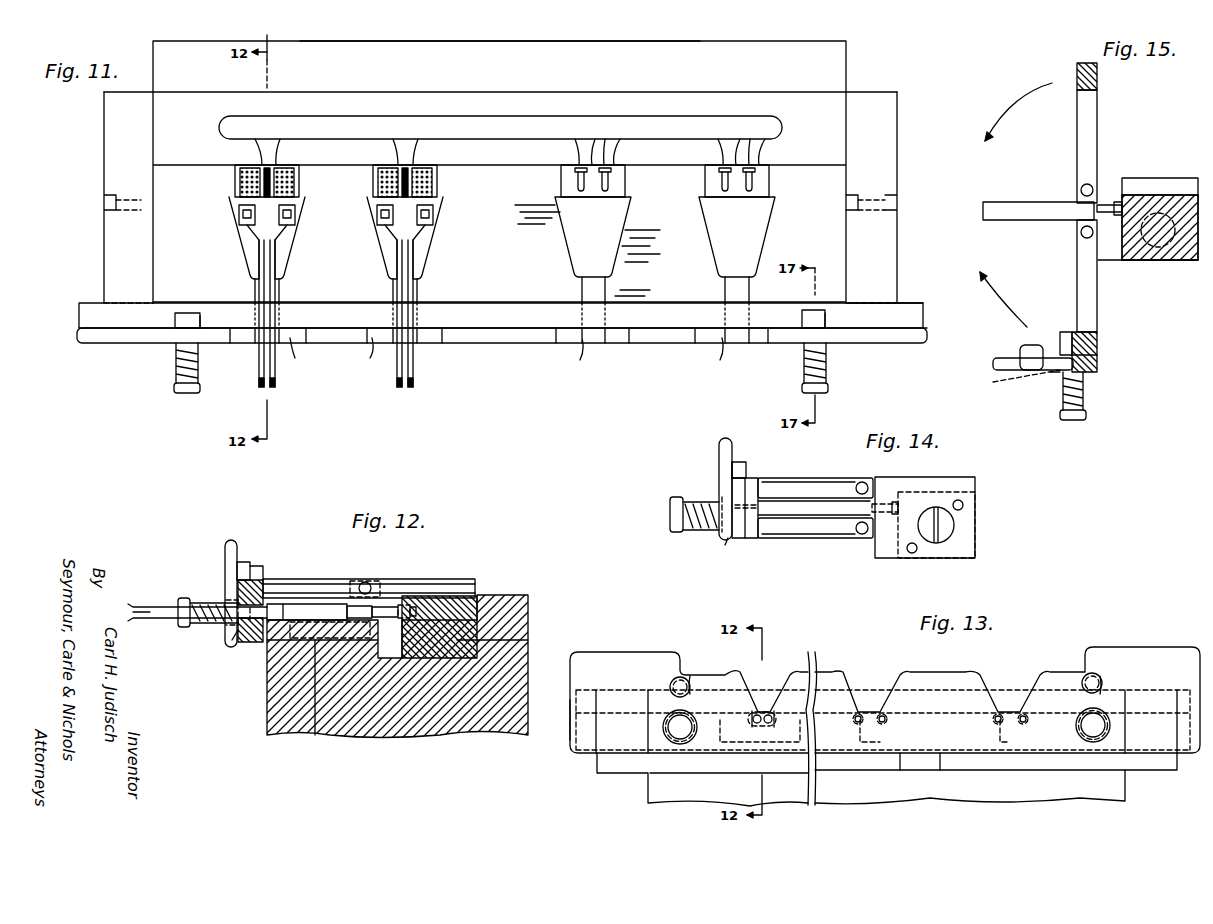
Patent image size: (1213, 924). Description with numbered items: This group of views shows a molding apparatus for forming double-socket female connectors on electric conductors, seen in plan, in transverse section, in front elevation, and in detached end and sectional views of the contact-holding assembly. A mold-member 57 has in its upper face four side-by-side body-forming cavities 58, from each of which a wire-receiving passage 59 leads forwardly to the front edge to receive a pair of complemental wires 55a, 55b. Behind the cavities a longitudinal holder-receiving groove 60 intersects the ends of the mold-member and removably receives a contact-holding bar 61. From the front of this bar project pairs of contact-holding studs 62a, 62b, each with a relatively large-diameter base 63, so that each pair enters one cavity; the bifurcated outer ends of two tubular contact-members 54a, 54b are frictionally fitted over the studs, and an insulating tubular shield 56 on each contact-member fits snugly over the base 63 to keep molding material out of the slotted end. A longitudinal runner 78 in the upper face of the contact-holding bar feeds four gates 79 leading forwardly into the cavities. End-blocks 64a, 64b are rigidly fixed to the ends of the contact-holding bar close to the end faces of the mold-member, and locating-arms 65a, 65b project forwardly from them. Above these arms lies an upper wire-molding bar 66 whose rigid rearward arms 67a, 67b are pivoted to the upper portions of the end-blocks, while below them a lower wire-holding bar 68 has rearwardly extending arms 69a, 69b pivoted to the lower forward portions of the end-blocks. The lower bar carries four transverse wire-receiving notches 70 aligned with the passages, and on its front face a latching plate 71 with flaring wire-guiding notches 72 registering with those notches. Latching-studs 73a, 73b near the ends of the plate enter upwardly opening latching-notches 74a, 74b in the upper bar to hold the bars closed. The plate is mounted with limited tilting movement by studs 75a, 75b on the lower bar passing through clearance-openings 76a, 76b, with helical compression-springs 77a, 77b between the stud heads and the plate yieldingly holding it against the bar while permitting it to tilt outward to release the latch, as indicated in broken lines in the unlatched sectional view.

In FIG. 11, the tubular contact-member 54a is at (377, 217).
In FIG. 12, the tubular contact-member 54a is at (355, 606).
In FIG. 13, the tubular contact-member 54a is at (757, 712).
In FIG. 11, the tubular contact-member 54b is at (433, 215).
In FIG. 13, the tubular contact-member 54b is at (770, 712).
In FIG. 11, the complemental wire 55a is at (397, 388).
In FIG. 12, the complemental wire 55a is at (145, 607).
In FIG. 13, the complemental wire 55a is at (755, 723).
In FIG. 11, the complemental wire 55b is at (414, 388).
In FIG. 12, the complemental wire 55b is at (160, 618).
In FIG. 13, the complemental wire 55b is at (770, 723).
In FIG. 11, the insulating tubular shield 56 is at (432, 192).
In FIG. 12, the insulating tubular shield 56 is at (382, 607).
In FIG. 13, the insulating tubular shield 56 is at (762, 712).
In FIG. 11, the mold-member 57 is at (500, 278).
In FIG. 12, the mold-member 57 is at (365, 735).
In FIG. 13, the mold-member 57 is at (822, 812).
In FIG. 11, the body-forming cavity 58 is at (712, 240).
In FIG. 12, the body-forming cavity 58 is at (300, 604).
In FIG. 13, the body-forming cavity 58 is at (975, 735).
In FIG. 11, the wire-receiving passage 59 is at (724, 290).
In FIG. 12, the wire-receiving passage 59 is at (283, 604).
In FIG. 11, the holder-receiving groove 60 is at (490, 92).
In FIG. 12, the holder-receiving groove 60 is at (502, 640).
In FIG. 13, the holder-receiving groove 60 is at (942, 770).
In FIG. 11, the contact-holding bar 61 is at (545, 92).
In FIG. 12, the contact-holding bar 61 is at (465, 598).
In FIG. 13, the contact-holding bar 61 is at (995, 690).
In FIG. 14, the contact-holding bar 61 is at (965, 492).
In FIG. 15, the contact-holding bar 61 is at (1178, 262).
In FIG. 11, the contact-holding stud 62a is at (722, 185).
In FIG. 12, the contact-holding stud 62a is at (402, 605).
In FIG. 13, the contact-holding stud 62a is at (996, 713).
In FIG. 15, the contact-holding stud 62a is at (1108, 205).
In FIG. 11, the contact-holding stud 62b is at (752, 185).
In FIG. 13, the contact-holding stud 62b is at (1023, 713).
In FIG. 14, the contact-holding stud 62b is at (880, 504).
In FIG. 11, the base 63 is at (746, 168).
In FIG. 12, the base 63 is at (418, 598).
In FIG. 13, the base 63 is at (1000, 725).
In FIG. 14, the base 63 is at (900, 490).
In FIG. 15, the base 63 is at (1118, 202).
In FIG. 11, the end-block 64a is at (104, 145).
In FIG. 12, the end-block 64a is at (478, 568).
In FIG. 13, the end-block 64a is at (615, 773).
In FIG. 15, the end-block 64a is at (1190, 178).
In FIG. 11, the end-block 64b is at (897, 160).
In FIG. 13, the end-block 64b is at (1163, 772).
In FIG. 14, the end-block 64b is at (975, 545).
In FIG. 11, the locating-arm 65a is at (82, 310).
In FIG. 12, the locating-arm 65a is at (267, 652).
In FIG. 13, the locating-arm 65a is at (692, 720).
In FIG. 15, the locating-arm 65a is at (1018, 202).
In FIG. 11, the locating-arm 65b is at (890, 305).
In FIG. 14, the locating-arm 65b is at (793, 515).
In FIG. 11, the upper wire-molding bar 66 is at (502, 351).
In FIG. 12, the upper wire-molding bar 66 is at (265, 580).
In FIG. 13, the upper wire-molding bar 66 is at (902, 680).
In FIG. 14, the upper wire-molding bar 66 is at (758, 480).
In FIG. 15, the upper wire-molding bar 66 is at (1077, 74).
In FIG. 12, the rigid arm 67a is at (310, 579).
In FIG. 13, the rigid arm 67a is at (617, 690).
In FIG. 15, the rigid arm 67a is at (1097, 110).
In FIG. 13, the rigid arm 67b is at (1148, 690).
In FIG. 14, the rigid arm 67b is at (812, 478).
In FIG. 12, the lower wire-holding bar 68 is at (250, 642).
In FIG. 13, the lower wire-holding bar 68 is at (900, 770).
In FIG. 14, the lower wire-holding bar 68 is at (748, 538).
In FIG. 15, the lower wire-holding bar 68 is at (1097, 348).
In FIG. 12, the rearwardly-extending arm 69a is at (300, 662).
In FIG. 15, the rearwardly-extending arm 69a is at (1097, 300).
In FIG. 14, the rearwardly-extending arm 69b is at (832, 540).
In FIG. 11, the wire-receiving notch 70 is at (722, 316).
In FIG. 12, the wire-receiving notch 70 is at (240, 640).
In FIG. 14, the wire-receiving notch 70 is at (735, 506).
In FIG. 15, the wire-receiving notch 70 is at (1064, 335).
In FIG. 11, the latching plate 71 is at (486, 334).
In FIG. 12, the latching plate 71 is at (231, 540).
In FIG. 13, the latching plate 71 is at (1115, 650).
In FIG. 14, the latching plate 71 is at (719, 446).
In FIG. 15, the latching plate 71 is at (993, 365).
In FIG. 11, the wire-guiding notch 72 is at (502, 351).
In FIG. 12, the wire-guiding notch 72 is at (232, 635).
In FIG. 13, the wire-guiding notch 72 is at (1030, 690).
In FIG. 14, the wire-guiding notch 72 is at (722, 542).
In FIG. 15, the wire-guiding notch 72 is at (1052, 375).
In FIG. 11, the latching-stud 73a is at (201, 316).
In FIG. 12, the latching-stud 73a is at (245, 562).
In FIG. 13, the latching-stud 73a is at (692, 678).
In FIG. 15, the latching-stud 73a is at (1022, 352).
In FIG. 11, the latching-stud 73b is at (826, 310).
In FIG. 13, the latching-stud 73b is at (1100, 678).
In FIG. 14, the latching-stud 73b is at (736, 462).
In FIG. 11, the latching-notch 74a is at (184, 313).
In FIG. 12, the latching-notch 74a is at (258, 566).
In FIG. 13, the latching-notch 74a is at (672, 683).
In FIG. 15, the latching-notch 74a is at (1097, 72).
In FIG. 11, the latching-notch 74b is at (802, 318).
In FIG. 13, the latching-notch 74b is at (1085, 678).
In FIG. 14, the latching-notch 74b is at (745, 470).
In FIG. 11, the stud 75a is at (187, 393).
In FIG. 12, the stud 75a is at (183, 598).
In FIG. 13, the stud 75a is at (682, 744).
In FIG. 15, the stud 75a is at (1075, 420).
In FIG. 11, the stud 75b is at (820, 390).
In FIG. 13, the stud 75b is at (1093, 742).
In FIG. 14, the stud 75b is at (670, 514).
In FIG. 12, the clearance-opening 76a is at (228, 600).
In FIG. 15, the clearance-opening 76a is at (1097, 368).
In FIG. 14, the clearance-opening 76b is at (722, 502).
In FIG. 11, the helical compression-spring 77a is at (176, 366).
In FIG. 12, the helical compression-spring 77a is at (200, 625).
In FIG. 13, the helical compression-spring 77a is at (663, 727).
In FIG. 15, the helical compression-spring 77a is at (1090, 394).
In FIG. 11, the helical compression-spring 77b is at (828, 365).
In FIG. 13, the helical compression-spring 77b is at (1110, 725).
In FIG. 14, the helical compression-spring 77b is at (690, 532).
In FIG. 11, the runner 78 is at (454, 116).
In FIG. 12, the runner 78 is at (450, 596).
In FIG. 11, the gate 79 is at (718, 150).
In FIG. 12, the gate 79 is at (433, 598).